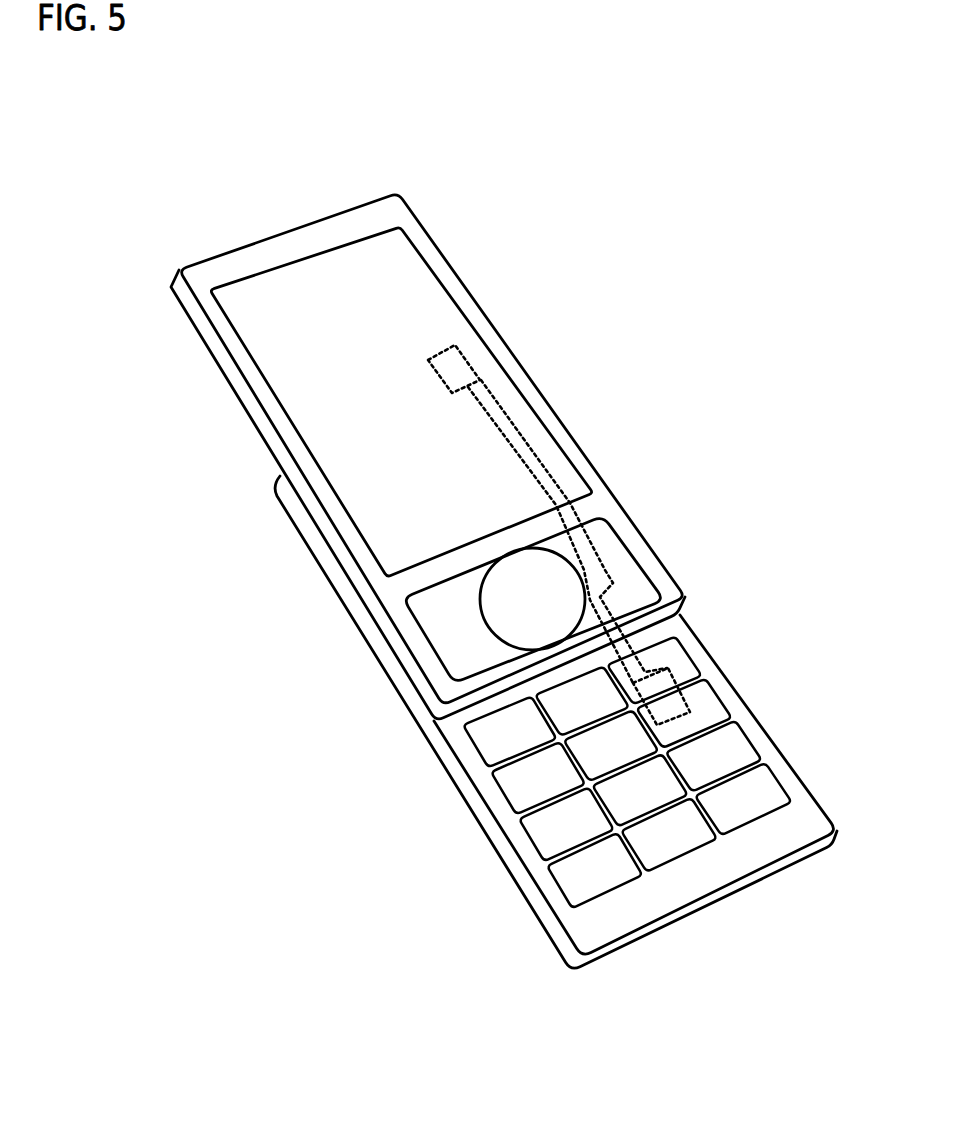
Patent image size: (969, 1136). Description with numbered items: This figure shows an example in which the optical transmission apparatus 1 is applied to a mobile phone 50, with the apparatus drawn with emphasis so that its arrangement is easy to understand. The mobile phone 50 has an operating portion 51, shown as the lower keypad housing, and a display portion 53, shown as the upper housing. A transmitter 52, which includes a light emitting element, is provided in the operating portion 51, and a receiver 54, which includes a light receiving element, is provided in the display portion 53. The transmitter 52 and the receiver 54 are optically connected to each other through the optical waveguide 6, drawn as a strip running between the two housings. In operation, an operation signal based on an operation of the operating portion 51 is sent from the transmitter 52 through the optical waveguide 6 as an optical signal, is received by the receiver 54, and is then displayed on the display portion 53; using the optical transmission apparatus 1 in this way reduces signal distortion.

The mobile phone 50 is at (578, 160).
The display portion 53 is at (276, 414).
The operating portion 51 is at (474, 804).
The optical transmission apparatus 1 is at (652, 320).
The receiver 54 is at (458, 371).
The optical waveguide 6 is at (580, 539).
The transmitter 52 is at (637, 684).